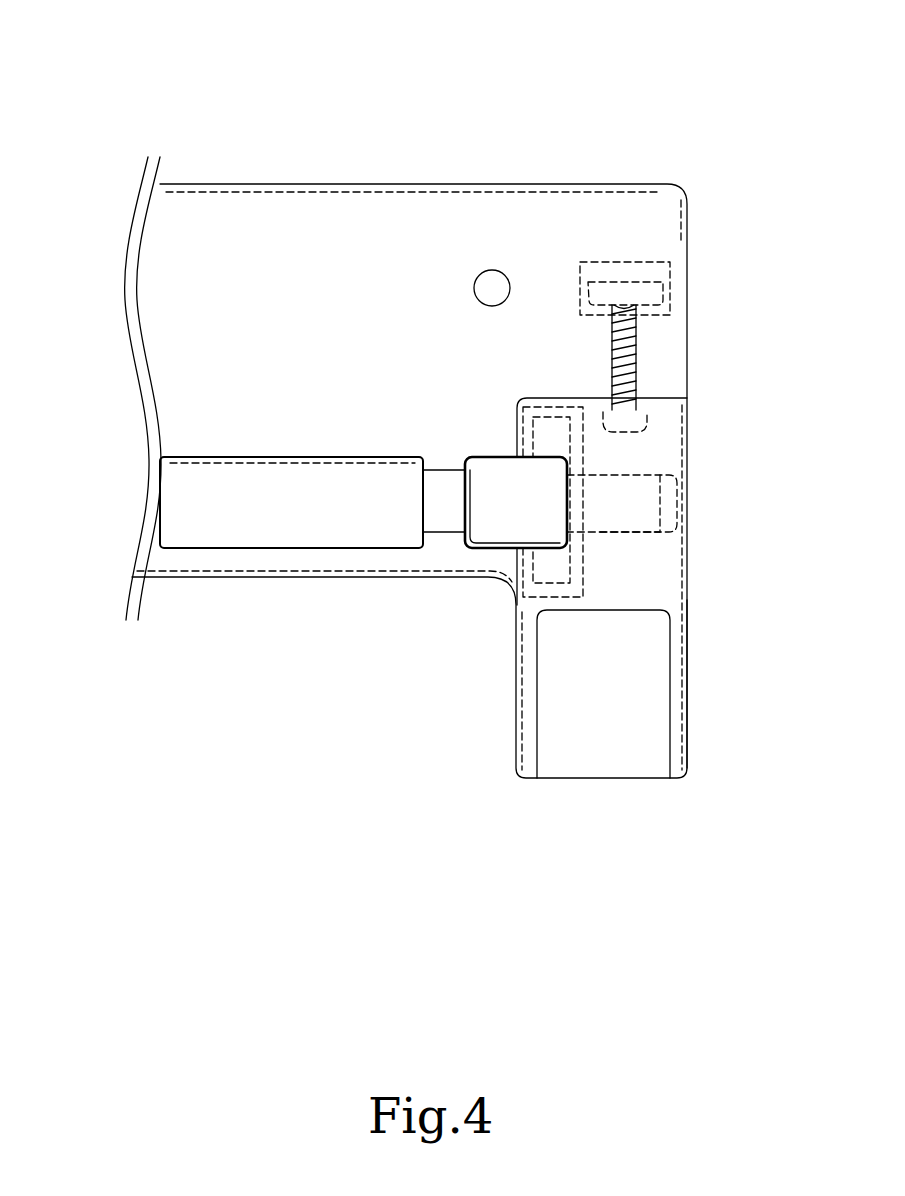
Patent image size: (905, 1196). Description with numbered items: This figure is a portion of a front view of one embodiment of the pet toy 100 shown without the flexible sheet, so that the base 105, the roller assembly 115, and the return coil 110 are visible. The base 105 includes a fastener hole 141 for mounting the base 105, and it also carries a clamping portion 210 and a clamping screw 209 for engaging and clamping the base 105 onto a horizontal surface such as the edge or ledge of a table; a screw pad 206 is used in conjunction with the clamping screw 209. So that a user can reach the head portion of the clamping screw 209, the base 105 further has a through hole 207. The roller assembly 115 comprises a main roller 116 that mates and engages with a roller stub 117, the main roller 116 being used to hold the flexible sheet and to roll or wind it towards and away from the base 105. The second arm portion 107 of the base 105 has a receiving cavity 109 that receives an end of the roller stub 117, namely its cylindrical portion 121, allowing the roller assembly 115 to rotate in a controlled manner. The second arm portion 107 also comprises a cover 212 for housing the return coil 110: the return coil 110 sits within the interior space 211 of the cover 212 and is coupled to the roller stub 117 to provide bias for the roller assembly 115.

The pet toy 100 is at (183, 65).
The base 105 is at (292, 324).
The second arm portion 107 is at (687, 727).
The receiving cavity 109 is at (683, 487).
The return coil 110 is at (523, 408).
The roller assembly 115 is at (117, 504).
The main roller 116 is at (330, 549).
The roller stub 117 is at (500, 549).
The cylindrical portion 121 is at (643, 533).
The fastener hole 141 is at (500, 271).
The screw pad 206 is at (663, 288).
The through hole 207 is at (611, 735).
The clamping screw 209 is at (637, 350).
The clamping portion 210 is at (668, 262).
The interior space 211 is at (525, 440).
The cover 212 is at (542, 398).